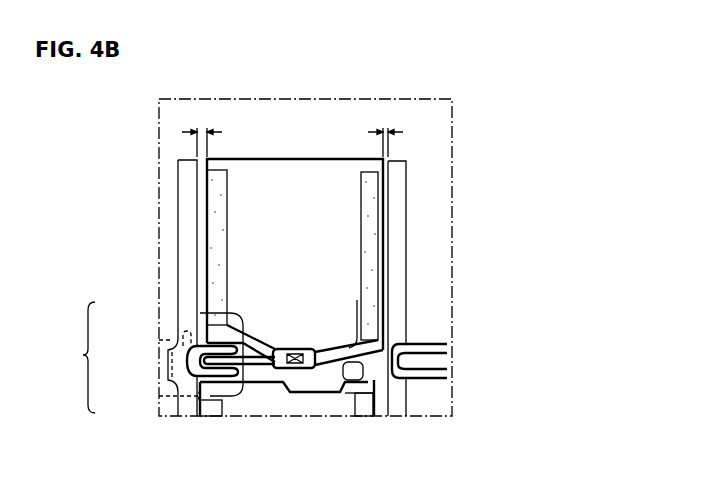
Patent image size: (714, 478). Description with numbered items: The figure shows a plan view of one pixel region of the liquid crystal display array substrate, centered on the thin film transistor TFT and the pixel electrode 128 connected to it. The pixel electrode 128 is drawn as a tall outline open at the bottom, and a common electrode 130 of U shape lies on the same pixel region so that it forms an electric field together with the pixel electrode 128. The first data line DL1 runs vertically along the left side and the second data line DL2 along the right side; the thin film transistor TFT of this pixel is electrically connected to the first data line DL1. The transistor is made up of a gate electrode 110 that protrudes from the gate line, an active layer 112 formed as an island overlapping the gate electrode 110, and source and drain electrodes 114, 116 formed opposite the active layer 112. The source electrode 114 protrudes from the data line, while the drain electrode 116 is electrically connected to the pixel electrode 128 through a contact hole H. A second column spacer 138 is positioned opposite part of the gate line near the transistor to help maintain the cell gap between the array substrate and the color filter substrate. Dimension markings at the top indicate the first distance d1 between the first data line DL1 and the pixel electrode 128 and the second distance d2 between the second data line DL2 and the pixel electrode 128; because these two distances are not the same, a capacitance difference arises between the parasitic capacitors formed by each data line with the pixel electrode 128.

The gate electrode 110 is at (243, 333).
The active layer 112 is at (183, 338).
The source electrode 114 is at (204, 361).
The drain electrode 116 is at (203, 388).
The pixel electrode 128 is at (293, 158).
The common electrode 130 is at (197, 214).
The second column spacer 138 is at (351, 367).
The contact hole H is at (295, 352).
The first data line DL1 is at (187, 184).
The second data line DL2 is at (397, 160).
The first distance d1 is at (202, 135).
The second distance d2 is at (385, 135).
The thin film transistor TFT is at (70, 357).